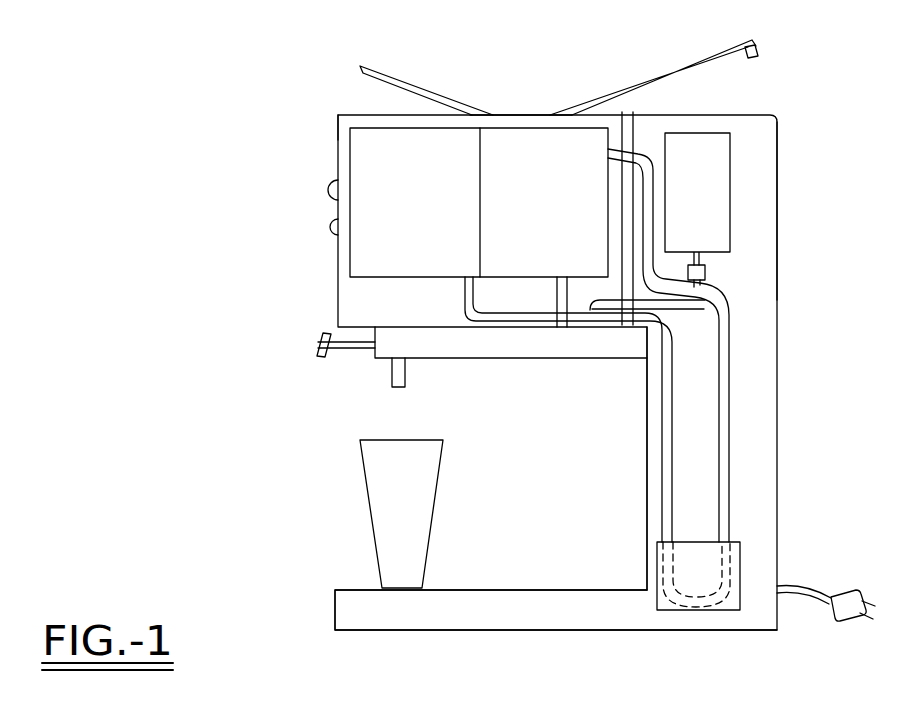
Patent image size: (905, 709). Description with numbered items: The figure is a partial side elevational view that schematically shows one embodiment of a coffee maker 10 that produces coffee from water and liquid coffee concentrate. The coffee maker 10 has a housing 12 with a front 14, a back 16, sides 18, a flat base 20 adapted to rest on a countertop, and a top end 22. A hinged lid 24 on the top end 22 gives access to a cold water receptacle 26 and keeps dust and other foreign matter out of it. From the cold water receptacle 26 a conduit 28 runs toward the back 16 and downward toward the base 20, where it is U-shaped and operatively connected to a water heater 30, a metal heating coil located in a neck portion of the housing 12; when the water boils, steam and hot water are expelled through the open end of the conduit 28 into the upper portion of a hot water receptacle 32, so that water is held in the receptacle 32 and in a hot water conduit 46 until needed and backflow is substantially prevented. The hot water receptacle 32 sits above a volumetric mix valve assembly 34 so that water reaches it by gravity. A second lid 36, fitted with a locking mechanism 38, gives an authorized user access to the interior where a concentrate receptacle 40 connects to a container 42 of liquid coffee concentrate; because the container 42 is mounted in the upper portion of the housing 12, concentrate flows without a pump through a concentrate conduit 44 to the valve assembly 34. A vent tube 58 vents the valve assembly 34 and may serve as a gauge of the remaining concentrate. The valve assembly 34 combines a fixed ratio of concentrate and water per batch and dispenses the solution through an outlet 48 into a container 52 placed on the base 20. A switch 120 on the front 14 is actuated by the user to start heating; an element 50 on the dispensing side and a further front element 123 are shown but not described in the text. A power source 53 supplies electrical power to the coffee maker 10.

The coffee maker 10 is at (350, 85).
The housing 12 is at (333, 126).
The front 14 is at (337, 287).
The back 16 is at (779, 218).
The sides 18 is at (753, 424).
The base 20 is at (493, 628).
The top end 22 is at (527, 113).
The lid 24 is at (415, 83).
The cold water receptacle 26 is at (423, 222).
The conduit 28 is at (463, 305).
The water heater 30 is at (716, 612).
The hot water receptacle 32 is at (557, 220).
The volumetric mix valve assembly 34 is at (455, 350).
The lid 36 is at (672, 68).
The locking mechanism 38 is at (762, 48).
The concentrate receptacle 40 is at (708, 272).
The container 42 is at (726, 160).
The concentrate conduit 44 is at (707, 288).
The hot water conduit 46 is at (566, 330).
The outlet 48 is at (390, 378).
The dispensing lever 50 is at (316, 343).
The container 52 is at (367, 492).
The power source 53 is at (838, 620).
The vent tube 58 is at (636, 114).
The switch 120 is at (328, 190).
The control knob 123 is at (330, 226).